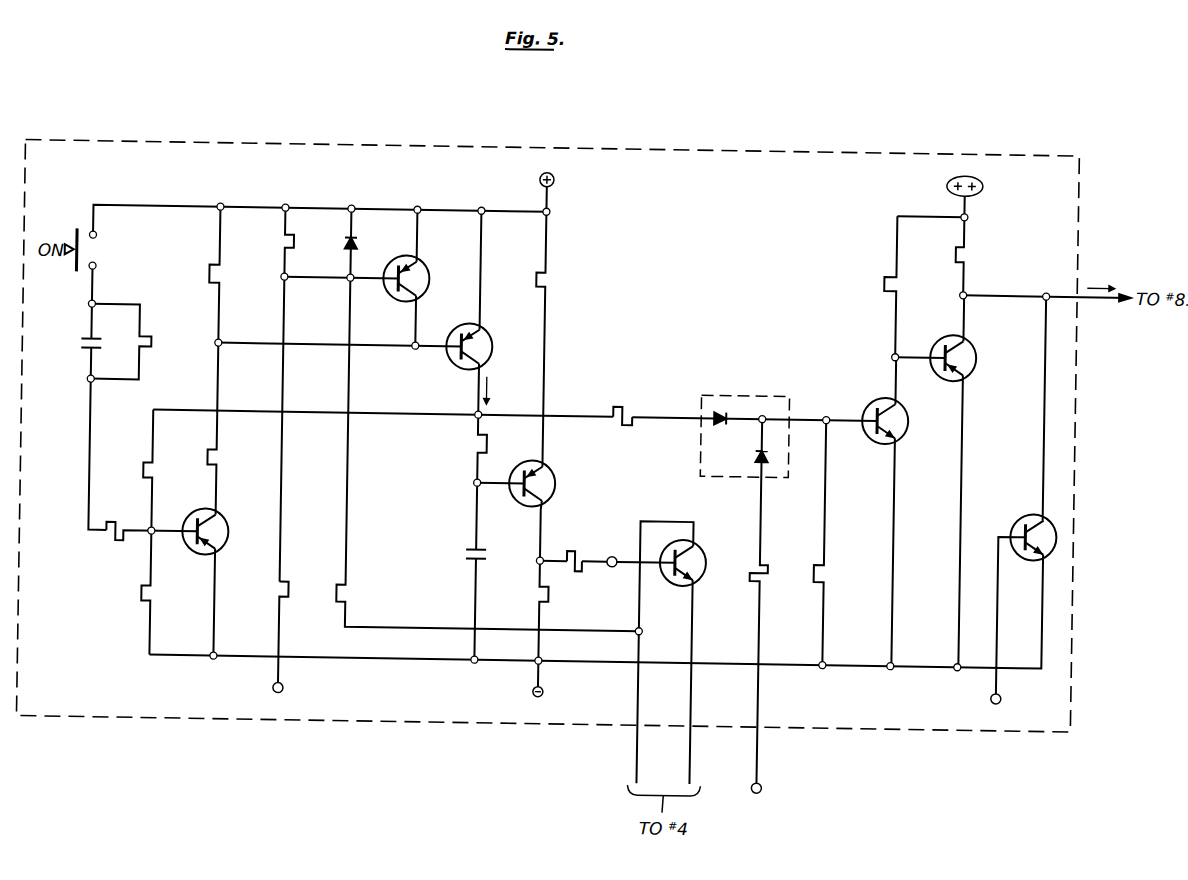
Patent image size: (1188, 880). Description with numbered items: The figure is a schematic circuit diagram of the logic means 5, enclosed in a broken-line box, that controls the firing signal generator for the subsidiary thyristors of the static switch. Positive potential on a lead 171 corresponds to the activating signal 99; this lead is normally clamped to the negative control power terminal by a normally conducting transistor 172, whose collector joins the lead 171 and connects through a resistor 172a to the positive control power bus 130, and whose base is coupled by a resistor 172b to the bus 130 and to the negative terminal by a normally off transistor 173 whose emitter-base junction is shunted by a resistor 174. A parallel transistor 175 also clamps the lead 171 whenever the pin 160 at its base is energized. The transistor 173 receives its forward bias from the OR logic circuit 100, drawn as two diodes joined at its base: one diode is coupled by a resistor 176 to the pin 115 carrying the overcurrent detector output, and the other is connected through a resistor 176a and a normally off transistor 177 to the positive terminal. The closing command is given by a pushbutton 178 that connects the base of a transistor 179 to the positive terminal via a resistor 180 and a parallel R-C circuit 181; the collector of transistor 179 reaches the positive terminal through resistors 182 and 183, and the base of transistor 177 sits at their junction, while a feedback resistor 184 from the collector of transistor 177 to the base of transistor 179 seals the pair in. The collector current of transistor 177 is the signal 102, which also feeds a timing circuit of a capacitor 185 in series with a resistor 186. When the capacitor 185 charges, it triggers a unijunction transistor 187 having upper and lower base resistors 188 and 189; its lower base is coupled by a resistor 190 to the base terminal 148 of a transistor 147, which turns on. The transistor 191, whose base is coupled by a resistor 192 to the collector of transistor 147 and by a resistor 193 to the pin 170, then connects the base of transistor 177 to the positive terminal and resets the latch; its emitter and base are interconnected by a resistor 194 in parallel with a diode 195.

The logic means 5 is at (245, 148).
The pushbutton 178 is at (93, 257).
The parallel R-C circuit 181 is at (123, 378).
The resistor 183 is at (206, 285).
The resistor 194 is at (279, 250).
The diode 195 is at (343, 249).
The transistor 191 is at (422, 268).
The transistor 177 is at (454, 366).
The signal 102 is at (486, 384).
The upper base resistor 188 is at (553, 278).
The feedback resistor 184 is at (144, 475).
The resistor 182 is at (222, 463).
The transistor 179 is at (226, 524).
The resistor 180 is at (118, 549).
The resistor 193 is at (280, 598).
The pin 170 is at (288, 692).
The resistor 186 is at (468, 451).
The unijunction transistor 187 is at (552, 470).
The capacitor 185 is at (467, 555).
The resistor 192 is at (350, 590).
The lower base resistor 189 is at (540, 597).
The resistor 190 is at (572, 551).
The base terminal 148 is at (614, 567).
The resistor 176a is at (615, 407).
The OR logic circuit 100 is at (742, 393).
The transistor 147 is at (703, 545).
The resistor 176 is at (752, 579).
The pin 115 is at (768, 786).
The resistor 174 is at (829, 580).
The transistor 173 is at (903, 433).
The resistor 172b is at (882, 280).
The positive control power bus 130 is at (917, 210).
The transistor 172 is at (972, 366).
The resistor 172a is at (964, 253).
The lead 171 is at (1011, 292).
The activating signal 99 is at (1095, 280).
The transistor 175 is at (1020, 514).
The pin 160 is at (995, 692).